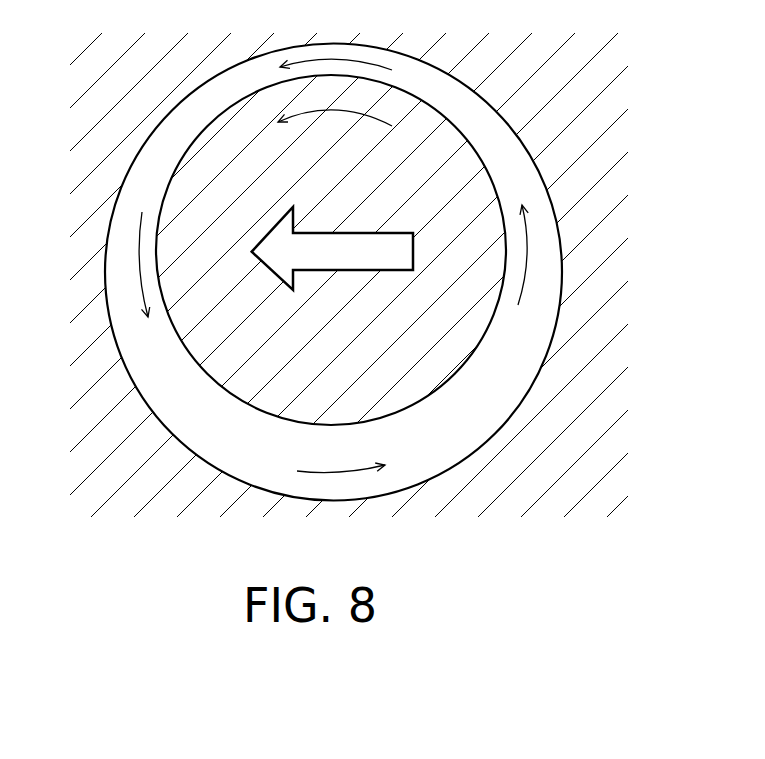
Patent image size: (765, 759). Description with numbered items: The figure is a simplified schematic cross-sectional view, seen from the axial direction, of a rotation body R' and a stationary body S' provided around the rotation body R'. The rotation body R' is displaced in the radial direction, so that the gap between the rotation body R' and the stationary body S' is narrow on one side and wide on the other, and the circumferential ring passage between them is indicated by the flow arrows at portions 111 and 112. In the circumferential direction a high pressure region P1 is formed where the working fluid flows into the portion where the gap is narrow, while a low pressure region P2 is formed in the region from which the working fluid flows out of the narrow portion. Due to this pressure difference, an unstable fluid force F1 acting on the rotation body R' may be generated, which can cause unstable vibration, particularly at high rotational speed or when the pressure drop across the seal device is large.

The lower flow passage portion 111 is at (338, 470).
The upper flow passage portion 112 is at (335, 107).
The high pressure region P1 is at (513, 235).
The low pressure region P2 is at (148, 238).
The fluid force F1 is at (353, 260).
The stationary body S' is at (333, 272).
The rotation body R' is at (331, 264).